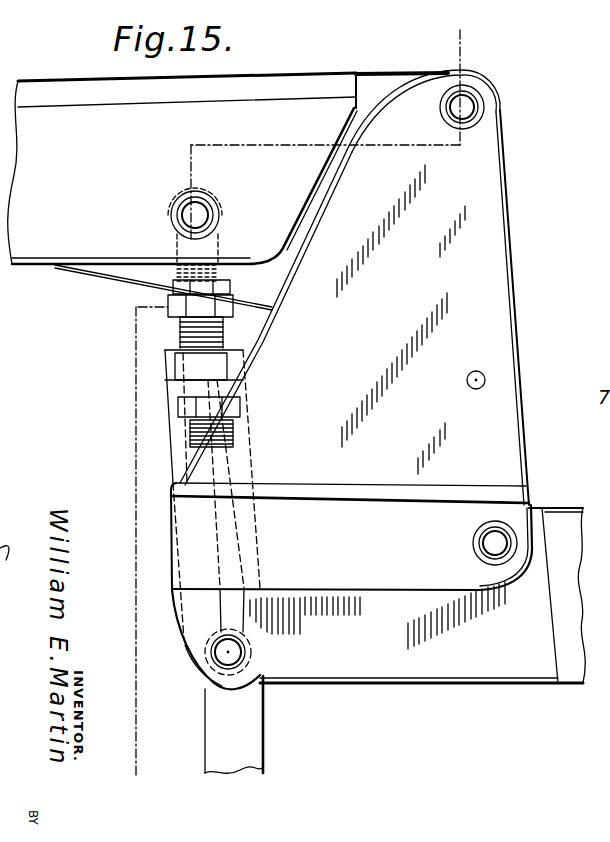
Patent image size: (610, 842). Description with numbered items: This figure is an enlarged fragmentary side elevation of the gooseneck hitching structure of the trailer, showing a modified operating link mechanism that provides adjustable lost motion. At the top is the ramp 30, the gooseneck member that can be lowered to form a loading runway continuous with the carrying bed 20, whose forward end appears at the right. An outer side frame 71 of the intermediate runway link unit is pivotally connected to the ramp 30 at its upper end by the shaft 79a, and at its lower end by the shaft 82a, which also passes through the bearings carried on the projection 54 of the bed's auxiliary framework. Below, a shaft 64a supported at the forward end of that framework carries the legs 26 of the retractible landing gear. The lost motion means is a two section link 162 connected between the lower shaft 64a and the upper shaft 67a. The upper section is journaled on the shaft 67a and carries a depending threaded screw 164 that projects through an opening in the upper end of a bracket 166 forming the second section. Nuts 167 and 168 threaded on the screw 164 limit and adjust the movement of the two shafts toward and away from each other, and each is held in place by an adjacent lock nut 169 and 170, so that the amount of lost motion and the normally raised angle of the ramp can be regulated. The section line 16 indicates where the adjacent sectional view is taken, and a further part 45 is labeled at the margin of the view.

The ramp 30 is at (80, 75).
The section line 16 is at (488, 40).
The outer side frame 71 is at (406, 314).
The shaft 79a is at (468, 104).
The rod eye pivot 67a is at (186, 214).
The lock nut 169 is at (170, 287).
The nut 167 is at (168, 312).
The depending threaded screw 164 is at (254, 342).
The two section link 162 is at (146, 382).
The nut 168 is at (242, 396).
The lock nut 170 is at (236, 426).
The bracket 166 is at (178, 462).
The parallel projection 54 is at (384, 664).
The shaft 82a is at (495, 540).
The carrying bed 20 is at (574, 500).
The shaft 64a is at (240, 652).
The leg structure 26 is at (252, 728).
The element 45 (partial) 45 is at (600, 233).